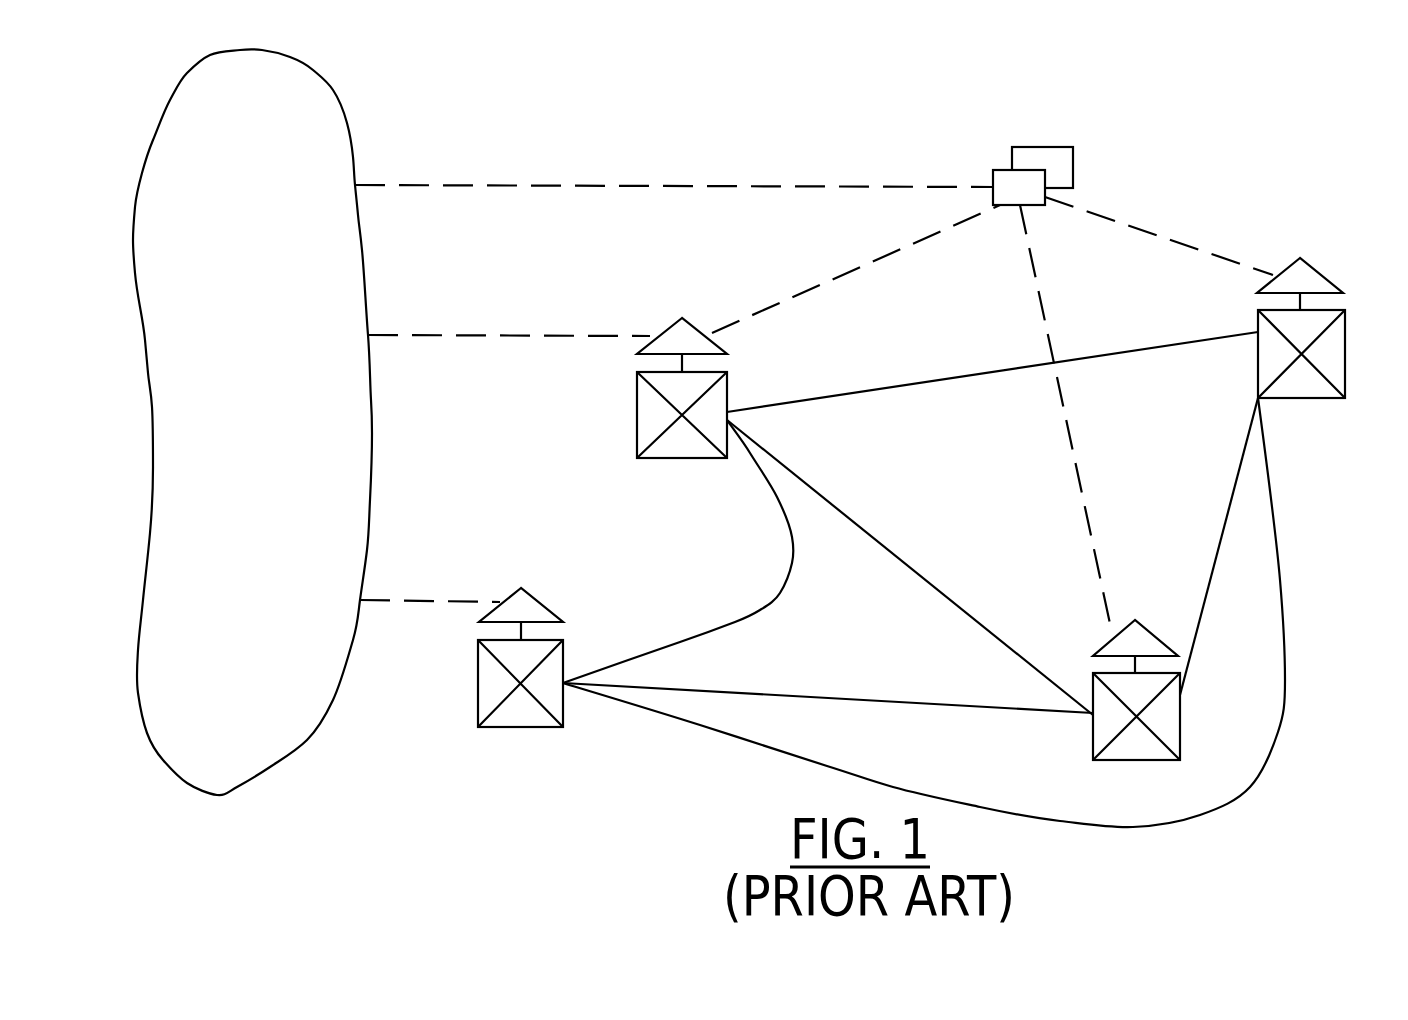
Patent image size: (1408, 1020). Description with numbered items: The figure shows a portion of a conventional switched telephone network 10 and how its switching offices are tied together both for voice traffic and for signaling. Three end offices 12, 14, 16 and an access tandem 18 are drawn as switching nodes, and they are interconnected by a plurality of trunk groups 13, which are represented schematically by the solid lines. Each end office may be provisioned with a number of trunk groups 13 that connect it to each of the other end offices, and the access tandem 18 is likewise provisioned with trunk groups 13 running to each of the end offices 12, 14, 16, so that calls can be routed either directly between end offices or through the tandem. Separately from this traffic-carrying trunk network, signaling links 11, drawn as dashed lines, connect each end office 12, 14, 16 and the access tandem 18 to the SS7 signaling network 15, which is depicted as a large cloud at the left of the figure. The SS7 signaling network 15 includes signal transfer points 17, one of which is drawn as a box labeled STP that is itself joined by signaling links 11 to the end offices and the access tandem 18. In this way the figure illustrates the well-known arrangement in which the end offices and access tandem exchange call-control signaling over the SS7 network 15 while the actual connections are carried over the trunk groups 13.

The switched telephone network 10 is at (572, 812).
The signaling links 11 is at (848, 190).
The end office 12 is at (535, 600).
The trunk groups 13 is at (1160, 345).
The end office 14 is at (637, 418).
The SS7 signaling network 15 is at (200, 824).
The end office 16 is at (1180, 735).
The signal transfer point 17 is at (1050, 148).
The access tandem 18 is at (1320, 276).